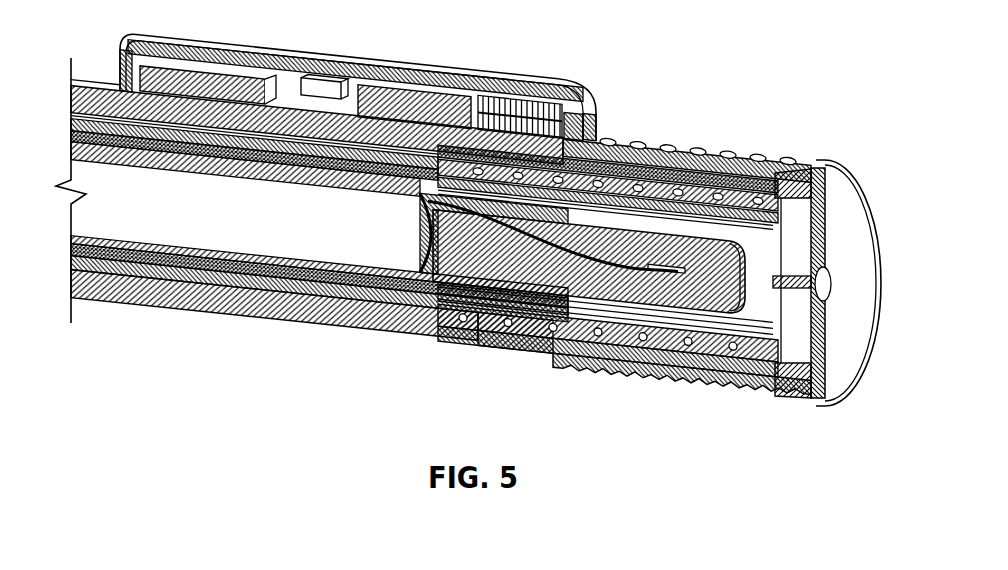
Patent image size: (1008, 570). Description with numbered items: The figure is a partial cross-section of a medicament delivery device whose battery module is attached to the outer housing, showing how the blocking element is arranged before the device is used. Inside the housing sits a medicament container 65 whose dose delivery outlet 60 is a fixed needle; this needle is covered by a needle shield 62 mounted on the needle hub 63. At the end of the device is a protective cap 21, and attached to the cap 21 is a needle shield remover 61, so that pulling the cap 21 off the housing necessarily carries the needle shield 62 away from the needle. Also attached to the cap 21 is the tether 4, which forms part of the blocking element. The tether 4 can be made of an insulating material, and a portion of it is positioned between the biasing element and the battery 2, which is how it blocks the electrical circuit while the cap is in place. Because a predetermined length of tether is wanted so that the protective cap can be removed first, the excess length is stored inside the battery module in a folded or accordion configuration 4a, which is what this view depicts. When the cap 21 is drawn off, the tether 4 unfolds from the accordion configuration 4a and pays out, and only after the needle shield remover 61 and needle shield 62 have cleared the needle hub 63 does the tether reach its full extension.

The battery 2 is at (437, 130).
The tether 4 is at (603, 133).
The folded or accordion configuration 4a is at (528, 130).
The protective cap 21 is at (766, 163).
The dose delivery outlet 60 is at (540, 280).
The needle shield remover 61 is at (593, 325).
The needle shield 62 is at (698, 282).
The needle hub 63 is at (425, 277).
The medicament container 65 is at (227, 253).